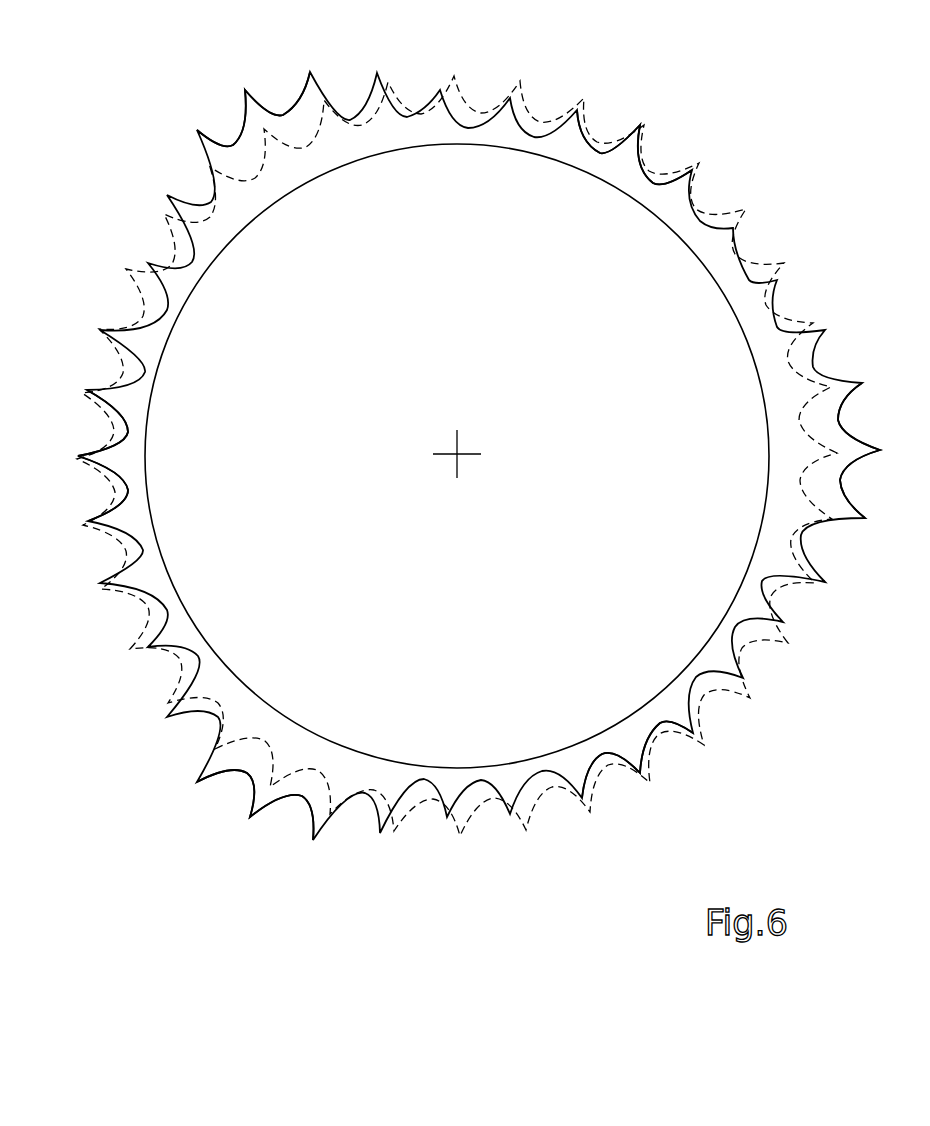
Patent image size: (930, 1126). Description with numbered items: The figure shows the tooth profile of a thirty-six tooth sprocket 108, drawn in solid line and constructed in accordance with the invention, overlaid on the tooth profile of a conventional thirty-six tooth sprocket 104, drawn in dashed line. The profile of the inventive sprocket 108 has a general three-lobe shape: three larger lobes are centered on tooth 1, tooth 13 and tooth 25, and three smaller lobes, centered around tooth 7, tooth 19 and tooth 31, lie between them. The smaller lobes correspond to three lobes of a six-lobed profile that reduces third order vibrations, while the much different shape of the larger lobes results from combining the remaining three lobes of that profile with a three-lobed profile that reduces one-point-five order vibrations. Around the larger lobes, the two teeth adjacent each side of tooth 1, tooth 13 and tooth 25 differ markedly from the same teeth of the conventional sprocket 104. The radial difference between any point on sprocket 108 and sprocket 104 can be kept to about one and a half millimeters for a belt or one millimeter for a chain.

The tooth 1 is at (872, 450).
The tooth 7 is at (634, 135).
The tooth 13 is at (253, 99).
The tooth 19 is at (76, 455).
The tooth 25 is at (255, 819).
The tooth 31 is at (637, 777).
The conventional thirty-six tooth sprocket 104 is at (736, 212).
The thirty-six tooth sprocket 108 is at (198, 132).